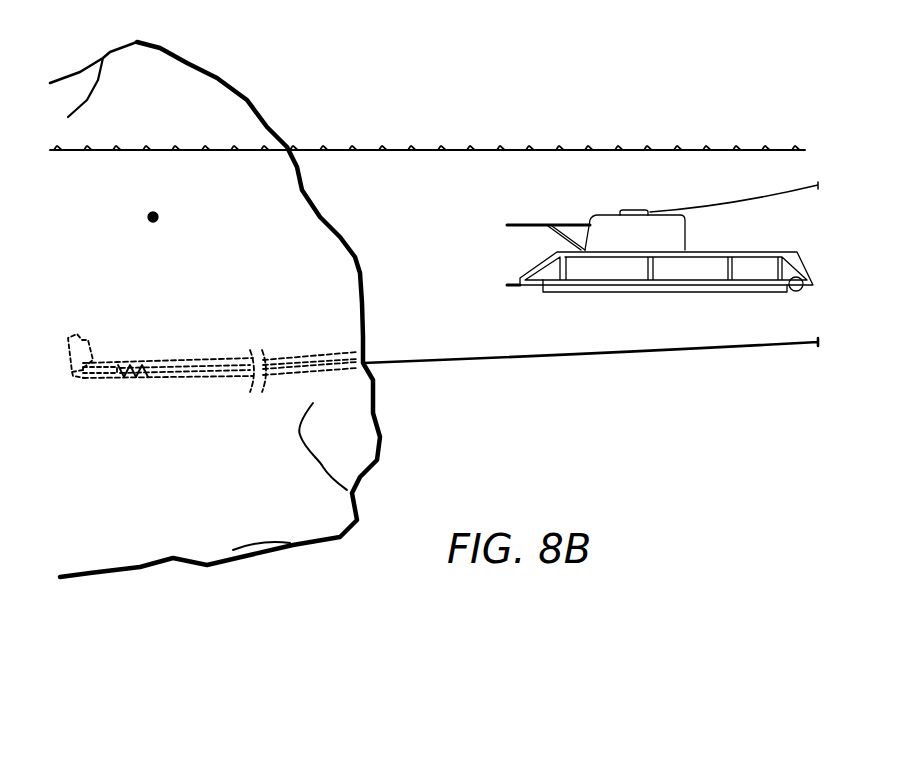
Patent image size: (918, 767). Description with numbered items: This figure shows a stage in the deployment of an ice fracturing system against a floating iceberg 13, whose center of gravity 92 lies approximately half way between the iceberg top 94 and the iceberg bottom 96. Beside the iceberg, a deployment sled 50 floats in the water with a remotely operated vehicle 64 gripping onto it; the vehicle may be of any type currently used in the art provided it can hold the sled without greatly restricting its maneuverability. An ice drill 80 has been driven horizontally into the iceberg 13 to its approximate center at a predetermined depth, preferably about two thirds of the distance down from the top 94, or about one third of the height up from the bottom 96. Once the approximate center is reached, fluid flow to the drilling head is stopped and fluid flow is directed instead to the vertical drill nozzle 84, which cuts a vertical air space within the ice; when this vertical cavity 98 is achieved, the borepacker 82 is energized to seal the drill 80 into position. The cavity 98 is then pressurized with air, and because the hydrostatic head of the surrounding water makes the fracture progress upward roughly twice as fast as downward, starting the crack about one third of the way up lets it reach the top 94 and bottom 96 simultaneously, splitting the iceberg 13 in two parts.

The iceberg 13 is at (343, 238).
The deployment sled 50 is at (662, 236).
The remotely operated vehicle 64 is at (602, 230).
The ice drill 80 is at (190, 375).
The borepacker 82 is at (137, 380).
The vertical drill nozzle 84 is at (93, 368).
The center of gravity 92 is at (154, 212).
The iceberg top 94 is at (137, 42).
The iceberg bottom 96 is at (168, 565).
The vertical cavity 98 is at (85, 338).